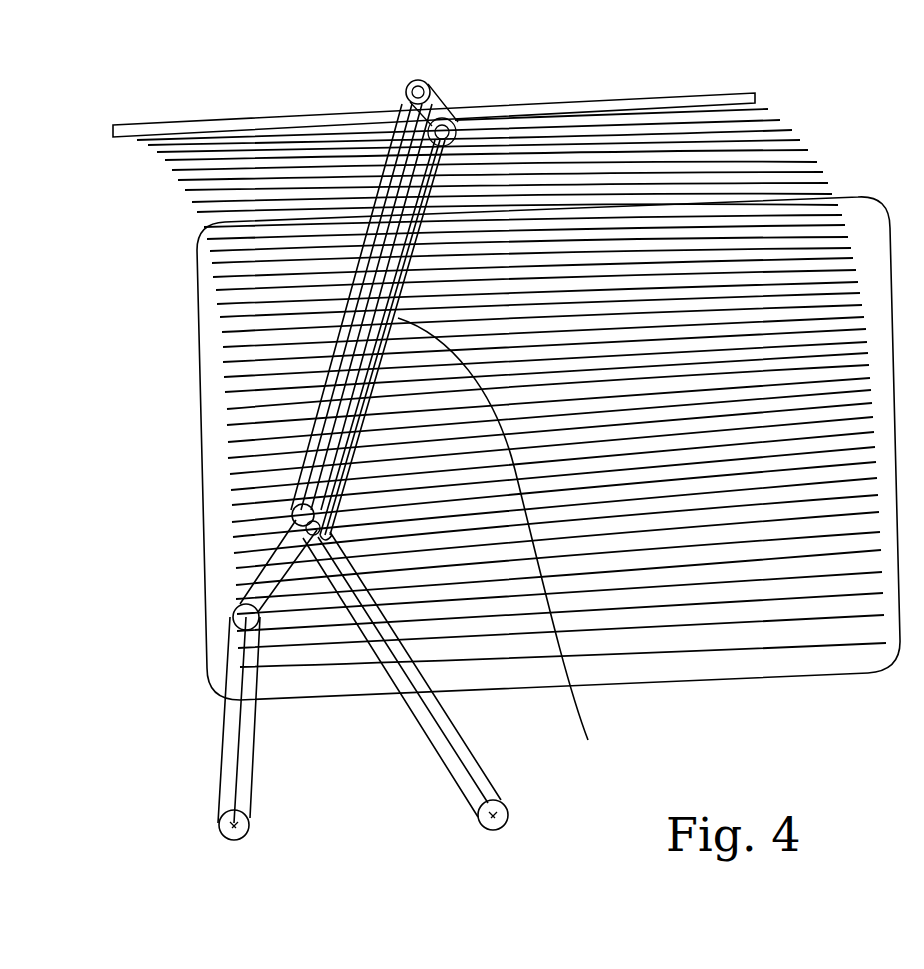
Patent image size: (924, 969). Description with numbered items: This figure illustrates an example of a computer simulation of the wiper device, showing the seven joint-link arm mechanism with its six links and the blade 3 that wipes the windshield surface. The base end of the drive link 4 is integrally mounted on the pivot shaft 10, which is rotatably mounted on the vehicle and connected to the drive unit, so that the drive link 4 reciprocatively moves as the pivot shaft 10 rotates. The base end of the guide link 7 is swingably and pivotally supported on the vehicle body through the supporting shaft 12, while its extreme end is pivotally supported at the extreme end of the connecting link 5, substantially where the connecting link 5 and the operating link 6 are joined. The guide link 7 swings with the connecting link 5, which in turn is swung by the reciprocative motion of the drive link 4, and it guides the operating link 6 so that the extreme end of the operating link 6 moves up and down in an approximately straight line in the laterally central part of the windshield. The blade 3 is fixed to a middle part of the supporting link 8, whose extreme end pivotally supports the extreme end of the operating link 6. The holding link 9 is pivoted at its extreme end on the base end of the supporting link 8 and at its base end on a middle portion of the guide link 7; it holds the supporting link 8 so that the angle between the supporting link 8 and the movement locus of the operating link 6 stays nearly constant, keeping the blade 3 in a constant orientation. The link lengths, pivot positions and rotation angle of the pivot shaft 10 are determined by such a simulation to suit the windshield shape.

The blade 3 is at (675, 100).
The drive link 4 is at (228, 768).
The connecting link 5 is at (258, 577).
The operating link 6 is at (330, 357).
The guide link 7 is at (440, 747).
The supporting link 8 is at (432, 90).
The holding link 9 is at (500, 549).
The pivot shaft 10 is at (213, 838).
The supporting shaft 12 is at (478, 825).